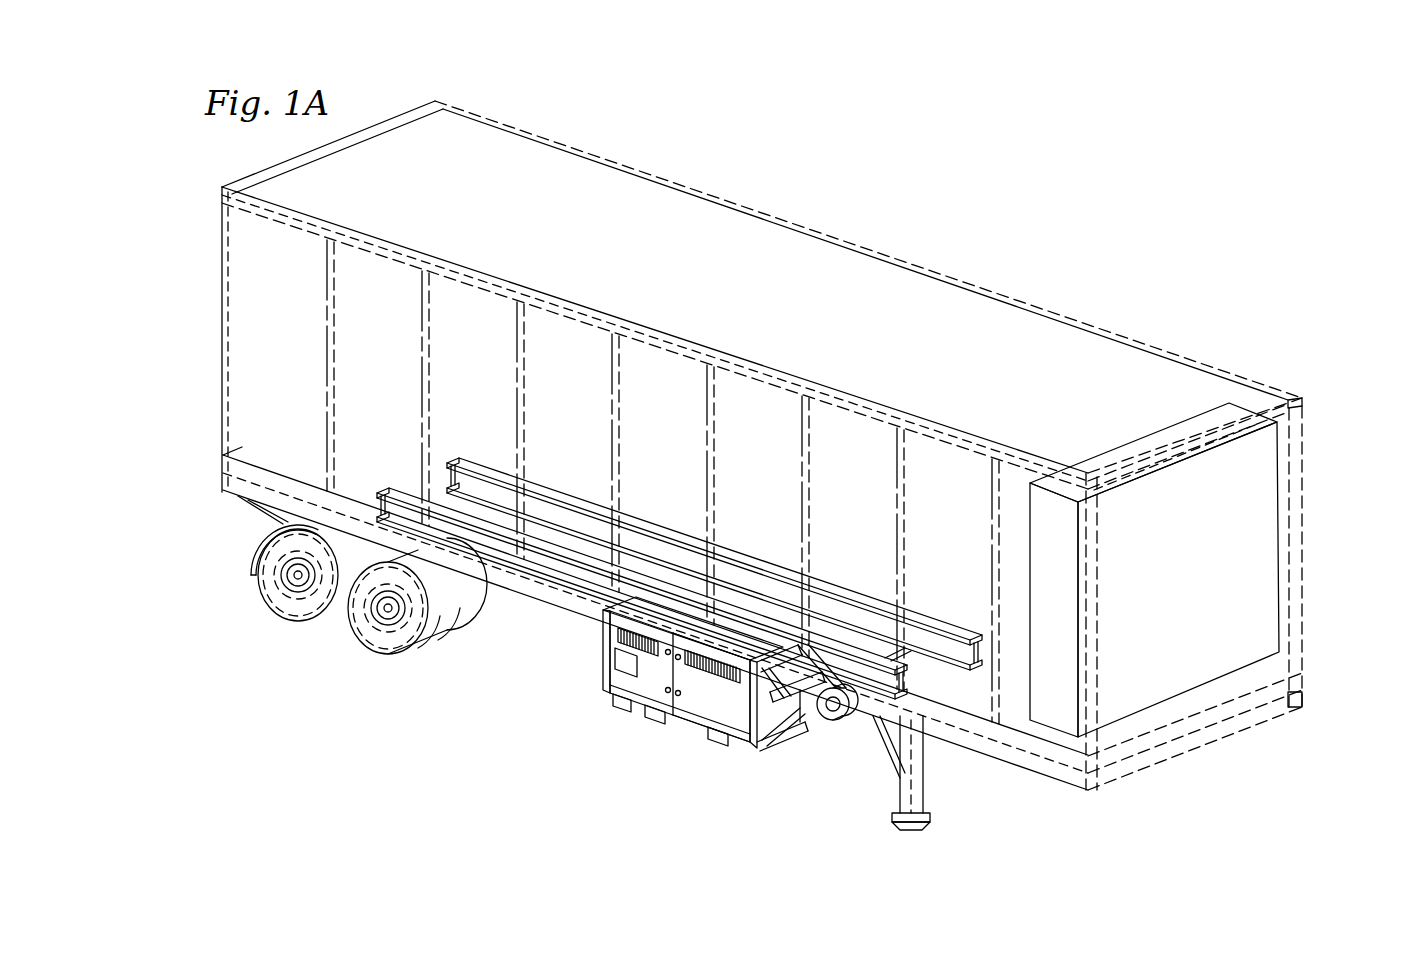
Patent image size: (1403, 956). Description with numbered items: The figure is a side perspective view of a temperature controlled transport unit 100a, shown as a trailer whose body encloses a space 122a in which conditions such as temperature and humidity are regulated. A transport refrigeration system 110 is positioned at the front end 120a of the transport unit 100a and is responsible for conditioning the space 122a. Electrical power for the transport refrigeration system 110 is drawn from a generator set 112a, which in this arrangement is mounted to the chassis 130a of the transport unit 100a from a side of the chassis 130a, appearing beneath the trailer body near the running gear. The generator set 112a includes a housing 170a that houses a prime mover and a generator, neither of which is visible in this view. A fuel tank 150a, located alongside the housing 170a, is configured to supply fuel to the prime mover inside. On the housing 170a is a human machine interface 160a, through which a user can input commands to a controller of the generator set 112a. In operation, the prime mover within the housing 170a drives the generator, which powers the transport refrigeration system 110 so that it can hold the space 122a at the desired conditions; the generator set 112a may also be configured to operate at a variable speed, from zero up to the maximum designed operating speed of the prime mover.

The temperature controlled transport unit 100a is at (1112, 172).
The transport refrigeration system 110 is at (1280, 567).
The front end 120a is at (1305, 417).
The space 122a is at (965, 372).
The chassis 130a is at (944, 652).
The fuel tank 150a is at (832, 717).
The human machine interface (HMI) 160a is at (624, 668).
The generator set 112a is at (700, 702).
The housing 170a is at (742, 718).